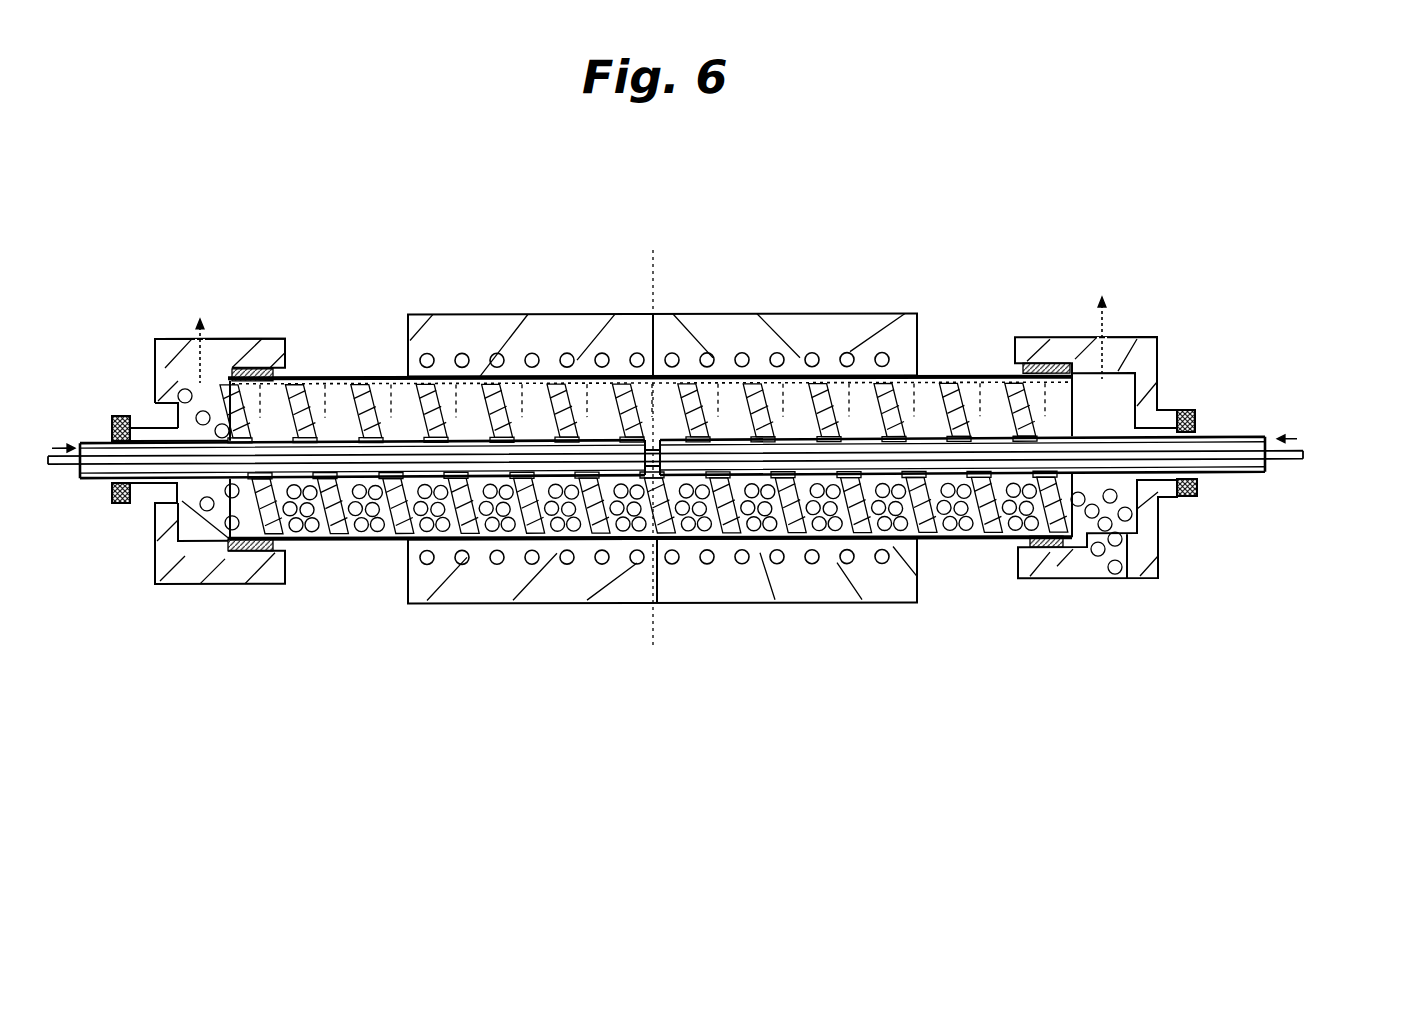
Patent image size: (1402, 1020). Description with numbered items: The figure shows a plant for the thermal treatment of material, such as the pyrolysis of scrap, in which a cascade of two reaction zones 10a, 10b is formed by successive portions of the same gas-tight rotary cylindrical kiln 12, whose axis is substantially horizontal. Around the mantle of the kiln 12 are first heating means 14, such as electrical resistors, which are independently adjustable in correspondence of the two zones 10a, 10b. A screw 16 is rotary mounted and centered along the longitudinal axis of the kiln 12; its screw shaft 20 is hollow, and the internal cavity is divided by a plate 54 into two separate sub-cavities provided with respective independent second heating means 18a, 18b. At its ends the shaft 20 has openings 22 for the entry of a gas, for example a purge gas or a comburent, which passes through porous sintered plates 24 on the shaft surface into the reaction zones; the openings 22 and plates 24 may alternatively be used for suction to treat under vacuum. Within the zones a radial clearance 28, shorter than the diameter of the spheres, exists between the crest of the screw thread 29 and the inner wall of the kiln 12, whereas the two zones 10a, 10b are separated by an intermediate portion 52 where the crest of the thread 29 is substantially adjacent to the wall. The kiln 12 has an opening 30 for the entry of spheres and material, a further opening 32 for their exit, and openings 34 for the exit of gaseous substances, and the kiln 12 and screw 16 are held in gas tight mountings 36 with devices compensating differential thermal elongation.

The first reaction zone 10a is at (330, 540).
The second reaction zone 10b is at (983, 540).
The rotary cylindrical kiln 12 is at (332, 378).
The first heating means 14 is at (530, 355).
The screw 16 is at (1268, 466).
The second heating means of first sub-cavity 18a is at (564, 355).
The second heating means of second sub-cavity 18b is at (725, 376).
The screw shaft 20 is at (1163, 518).
The openings for entry of a gas 22 is at (70, 470).
The porous sintered plates 24 is at (774, 340).
The radial clearance 28 is at (368, 376).
The screw thread 29 is at (972, 382).
The opening for entry of spheres and materials 30 is at (153, 398).
The opening for exit of spheres and materials 32 is at (1103, 579).
The openings for exit of gaseous substances 34 is at (210, 330).
The gas tight mountings 36 is at (152, 338).
The intermediate portion 52 is at (673, 547).
The plate 54 is at (568, 565).